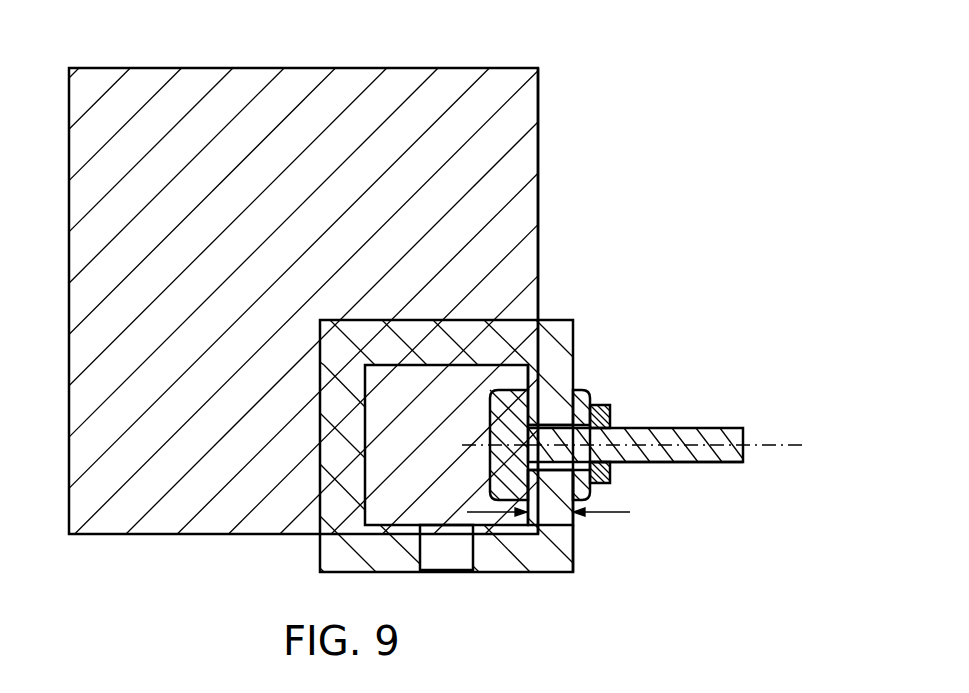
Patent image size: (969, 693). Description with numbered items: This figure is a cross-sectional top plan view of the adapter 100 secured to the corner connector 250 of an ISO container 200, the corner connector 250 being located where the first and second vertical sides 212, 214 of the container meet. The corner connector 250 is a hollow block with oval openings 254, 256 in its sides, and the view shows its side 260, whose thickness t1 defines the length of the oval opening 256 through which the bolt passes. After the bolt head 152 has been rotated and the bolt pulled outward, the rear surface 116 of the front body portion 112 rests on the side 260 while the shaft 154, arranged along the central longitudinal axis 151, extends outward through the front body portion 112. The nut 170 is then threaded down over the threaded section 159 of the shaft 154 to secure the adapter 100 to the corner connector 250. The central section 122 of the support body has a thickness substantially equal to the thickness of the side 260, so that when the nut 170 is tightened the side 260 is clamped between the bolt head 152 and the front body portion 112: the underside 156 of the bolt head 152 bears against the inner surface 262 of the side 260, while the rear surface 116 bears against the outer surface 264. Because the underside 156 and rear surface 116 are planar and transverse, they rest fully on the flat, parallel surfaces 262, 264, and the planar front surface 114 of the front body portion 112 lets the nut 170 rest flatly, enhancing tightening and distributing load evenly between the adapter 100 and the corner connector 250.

The ISO container 200 is at (518, 52).
The second vertical side 214 is at (538, 143).
The first vertical side 212 is at (152, 535).
The corner connector 250 is at (557, 300).
The oval opening 254 is at (447, 560).
The oval opening 256 is at (573, 525).
The side 260 is at (563, 538).
The outer surface 264 is at (575, 565).
The inner surface 262 is at (528, 378).
The rear surface 116 is at (562, 405).
The adapter 100 is at (612, 372).
The underside 156 is at (492, 392).
The bolt head 152 is at (500, 478).
The central section 122 is at (495, 438).
The front body portion 112 is at (580, 398).
The front surface 114 is at (596, 404).
The nut 170 is at (612, 414).
The shaft 154 is at (692, 415).
The threaded section 159 is at (718, 463).
The central longitudinal axis 151 is at (778, 443).